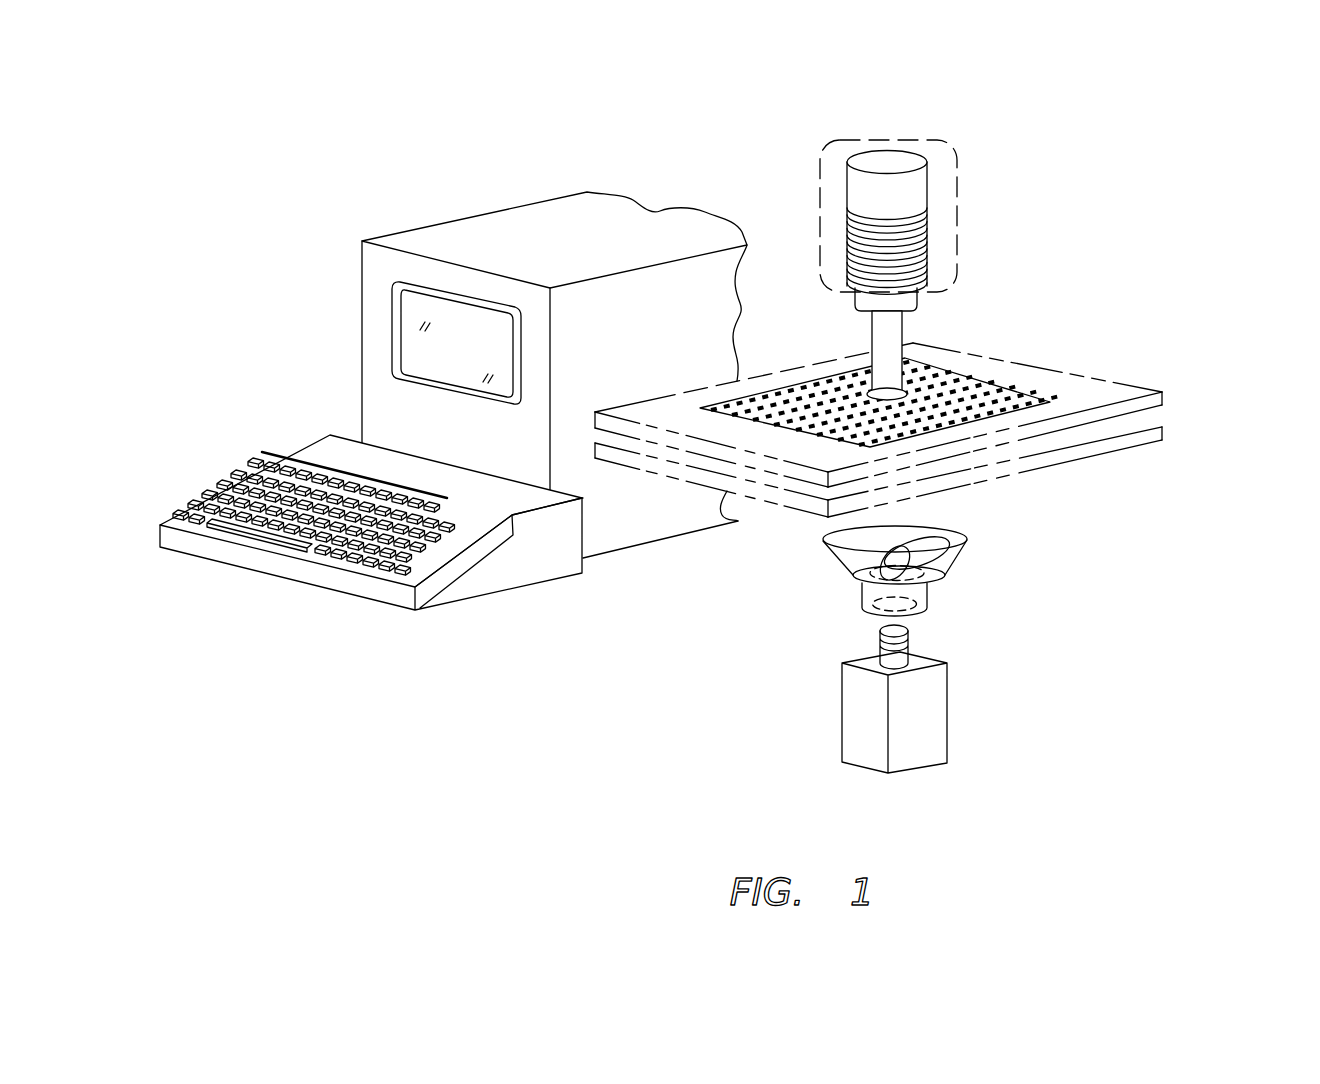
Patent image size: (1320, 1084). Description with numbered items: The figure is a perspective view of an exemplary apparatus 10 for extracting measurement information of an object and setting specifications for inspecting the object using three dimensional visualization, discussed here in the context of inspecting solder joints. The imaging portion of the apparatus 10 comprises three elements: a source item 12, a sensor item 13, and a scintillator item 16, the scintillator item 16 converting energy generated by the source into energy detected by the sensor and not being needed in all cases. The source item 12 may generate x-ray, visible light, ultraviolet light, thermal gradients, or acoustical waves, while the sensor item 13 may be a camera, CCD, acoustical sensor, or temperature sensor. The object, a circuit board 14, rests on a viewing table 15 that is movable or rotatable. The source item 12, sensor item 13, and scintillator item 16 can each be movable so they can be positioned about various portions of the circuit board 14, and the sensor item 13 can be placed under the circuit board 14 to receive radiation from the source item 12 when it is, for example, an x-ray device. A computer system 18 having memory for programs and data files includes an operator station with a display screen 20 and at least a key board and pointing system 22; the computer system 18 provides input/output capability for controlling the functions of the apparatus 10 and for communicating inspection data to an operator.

The apparatus 10 is at (686, 450).
The source item 12 is at (845, 183).
The sensor item 13 is at (867, 748).
The circuit board 14 is at (1008, 392).
The viewing table 15 is at (1093, 388).
The scintillator item 16 is at (967, 537).
The computer system 18 is at (435, 224).
The display screen 20 is at (413, 338).
The key board and pointing system 22 is at (218, 482).